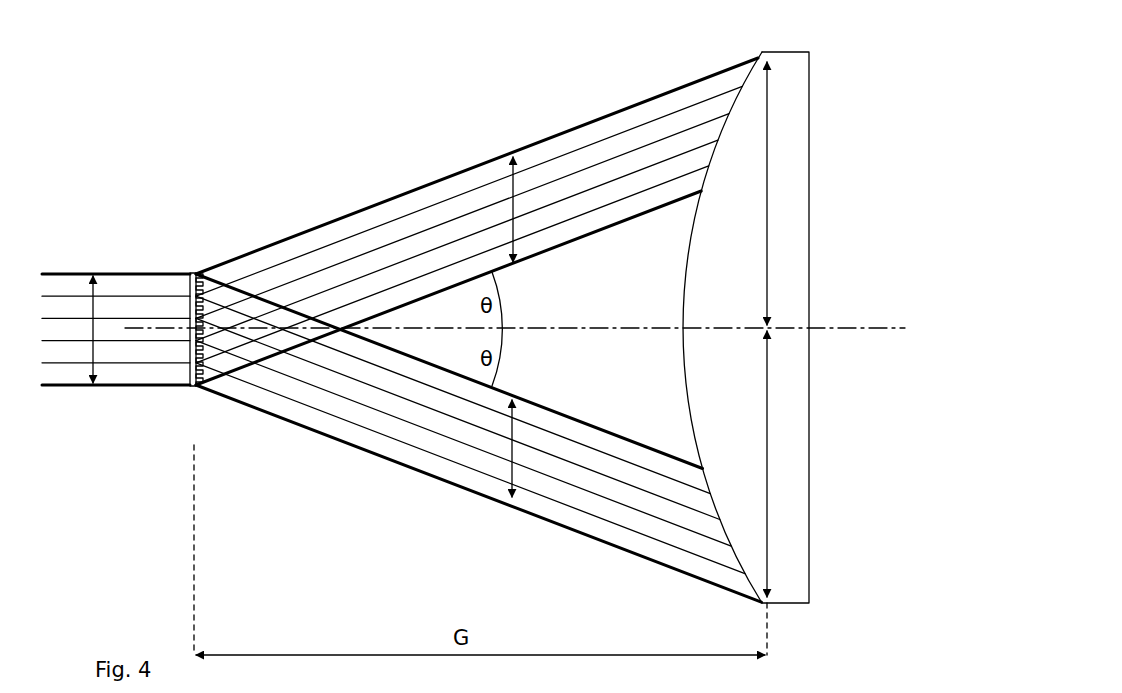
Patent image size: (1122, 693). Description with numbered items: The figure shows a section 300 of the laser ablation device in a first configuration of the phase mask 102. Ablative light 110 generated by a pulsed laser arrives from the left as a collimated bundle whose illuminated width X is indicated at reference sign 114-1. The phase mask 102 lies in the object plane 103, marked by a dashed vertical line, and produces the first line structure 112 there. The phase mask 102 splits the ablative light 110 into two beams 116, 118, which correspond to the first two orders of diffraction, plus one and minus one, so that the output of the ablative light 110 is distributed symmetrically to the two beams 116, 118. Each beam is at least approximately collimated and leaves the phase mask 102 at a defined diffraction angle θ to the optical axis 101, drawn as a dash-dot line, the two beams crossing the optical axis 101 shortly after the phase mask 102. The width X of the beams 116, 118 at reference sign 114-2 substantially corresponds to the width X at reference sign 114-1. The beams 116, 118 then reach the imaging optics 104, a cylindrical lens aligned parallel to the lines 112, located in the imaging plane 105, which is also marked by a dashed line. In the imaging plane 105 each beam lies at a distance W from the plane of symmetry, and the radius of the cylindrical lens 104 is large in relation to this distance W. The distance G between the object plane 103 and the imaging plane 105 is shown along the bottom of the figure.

The section of the device 300 is at (198, 107).
The optical axis 101 is at (872, 327).
The phase mask 102 is at (193, 273).
The object plane 103 is at (194, 609).
The imaging optics 104 is at (800, 128).
The imaging plane 105 is at (770, 637).
The ablative light 110 is at (66, 290).
The first line structure 112 is at (214, 272).
The width of the ablative light 114-1 is at (114, 387).
The width of the beams 114-2 is at (532, 258).
The first beam 116 is at (537, 155).
The second beam 118 is at (543, 505).